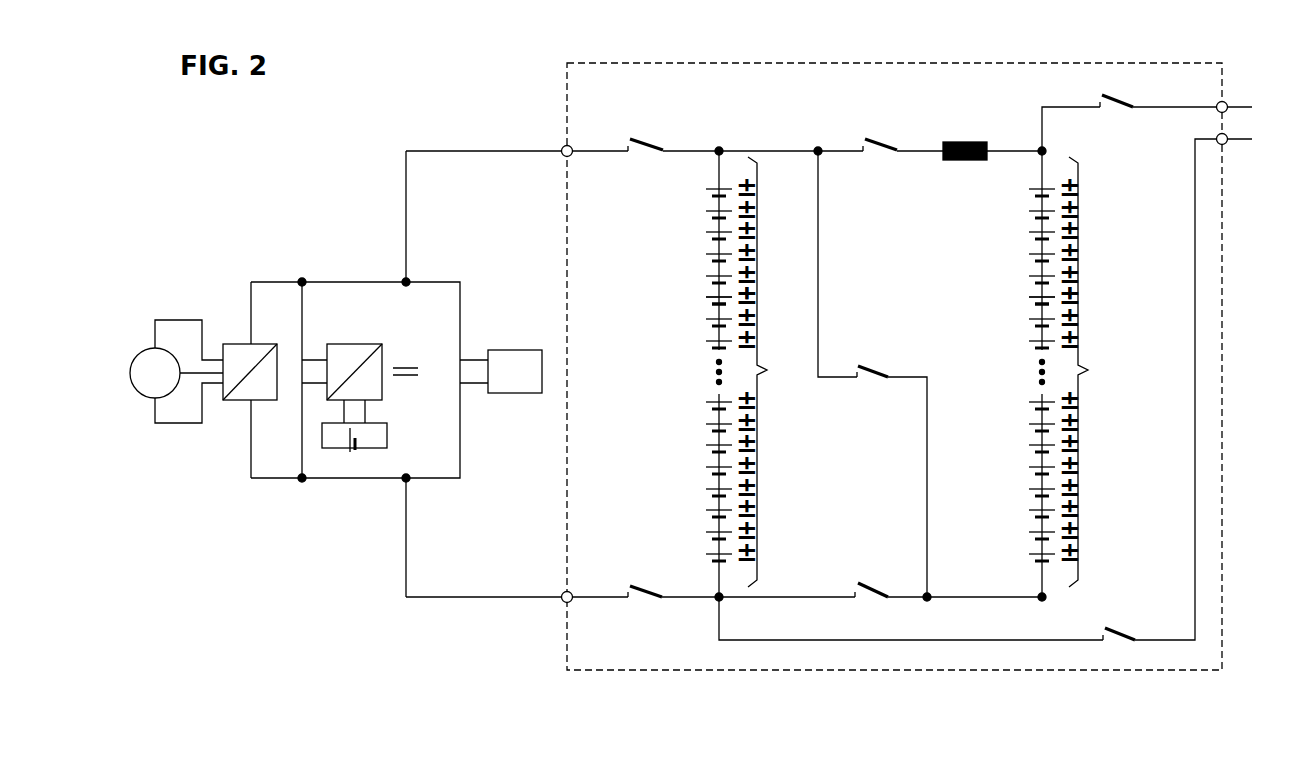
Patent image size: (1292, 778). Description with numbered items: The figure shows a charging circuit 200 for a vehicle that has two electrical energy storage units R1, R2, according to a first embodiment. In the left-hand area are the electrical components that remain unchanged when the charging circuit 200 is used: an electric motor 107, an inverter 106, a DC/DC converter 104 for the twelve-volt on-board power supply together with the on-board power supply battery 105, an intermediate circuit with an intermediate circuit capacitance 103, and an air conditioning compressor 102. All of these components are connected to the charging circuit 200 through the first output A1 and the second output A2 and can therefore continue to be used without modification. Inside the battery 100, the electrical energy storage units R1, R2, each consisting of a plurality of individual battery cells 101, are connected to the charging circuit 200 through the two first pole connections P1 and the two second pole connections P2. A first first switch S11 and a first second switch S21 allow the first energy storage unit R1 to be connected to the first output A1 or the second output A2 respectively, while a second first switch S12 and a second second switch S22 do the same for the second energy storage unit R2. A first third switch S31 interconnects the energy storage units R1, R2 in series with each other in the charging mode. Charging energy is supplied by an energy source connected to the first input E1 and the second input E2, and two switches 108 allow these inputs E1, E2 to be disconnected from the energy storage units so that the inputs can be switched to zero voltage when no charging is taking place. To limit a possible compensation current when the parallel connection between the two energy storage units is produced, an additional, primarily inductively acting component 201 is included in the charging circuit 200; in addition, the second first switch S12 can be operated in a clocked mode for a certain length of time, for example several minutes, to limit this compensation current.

The battery 100 is at (1223, 620).
The battery cells 101 is at (712, 296).
The air conditioning compressor 102 is at (503, 349).
The intermediate circuit capacitance 103 is at (408, 366).
The DC/DC converter 104 is at (358, 343).
The on-board power supply battery 105 is at (350, 456).
The inverter 106 is at (236, 343).
The electric motor 107 is at (155, 347).
The switches 108 is at (1113, 104).
The charging circuit 200 is at (376, 158).
The primarily inductively acting component 201 is at (963, 141).
The first output A1 is at (564, 146).
The second output A2 is at (564, 602).
The first input E1 is at (1228, 102).
The second input E2 is at (1228, 145).
The first pole connections P1 is at (722, 147).
The second pole connections P2 is at (716, 601).
The first electrical energy storage unit R1 is at (752, 374).
The second electrical energy storage unit R2 is at (1074, 374).
The first first switch S11 is at (647, 154).
The second first switch S12 is at (882, 142).
The first second switch S21 is at (650, 591).
The second second switch S22 is at (878, 586).
The first third switch S31 is at (876, 367).